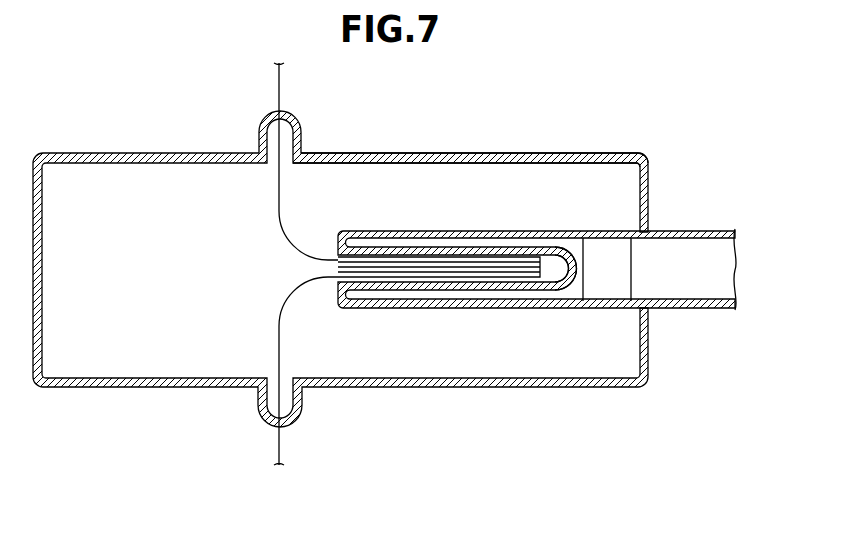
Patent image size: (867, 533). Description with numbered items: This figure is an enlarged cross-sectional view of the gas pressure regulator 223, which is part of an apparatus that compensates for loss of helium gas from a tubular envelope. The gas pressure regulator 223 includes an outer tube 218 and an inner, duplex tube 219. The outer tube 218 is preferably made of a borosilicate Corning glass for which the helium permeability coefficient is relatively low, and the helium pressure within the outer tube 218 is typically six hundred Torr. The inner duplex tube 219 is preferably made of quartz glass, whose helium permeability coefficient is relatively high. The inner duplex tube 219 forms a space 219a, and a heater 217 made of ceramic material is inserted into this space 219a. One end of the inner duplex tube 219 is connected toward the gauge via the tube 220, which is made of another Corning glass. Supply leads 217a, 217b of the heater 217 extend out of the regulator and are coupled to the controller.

The heater 217 is at (455, 268).
The supply lead 217a is at (279, 90).
The supply lead 217b is at (283, 404).
The outer tube 218 is at (401, 156).
The inner duplex tube 219 is at (392, 243).
The space 219a is at (553, 262).
The tube 220 is at (602, 290).
The gas pressure regulator 223 is at (652, 168).